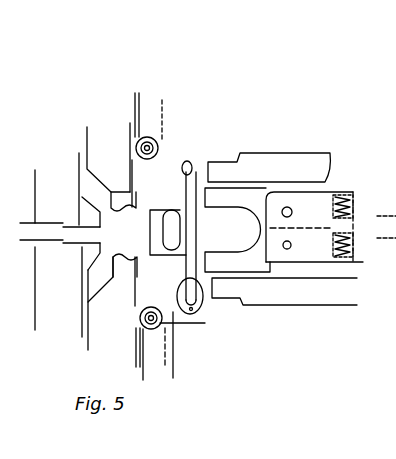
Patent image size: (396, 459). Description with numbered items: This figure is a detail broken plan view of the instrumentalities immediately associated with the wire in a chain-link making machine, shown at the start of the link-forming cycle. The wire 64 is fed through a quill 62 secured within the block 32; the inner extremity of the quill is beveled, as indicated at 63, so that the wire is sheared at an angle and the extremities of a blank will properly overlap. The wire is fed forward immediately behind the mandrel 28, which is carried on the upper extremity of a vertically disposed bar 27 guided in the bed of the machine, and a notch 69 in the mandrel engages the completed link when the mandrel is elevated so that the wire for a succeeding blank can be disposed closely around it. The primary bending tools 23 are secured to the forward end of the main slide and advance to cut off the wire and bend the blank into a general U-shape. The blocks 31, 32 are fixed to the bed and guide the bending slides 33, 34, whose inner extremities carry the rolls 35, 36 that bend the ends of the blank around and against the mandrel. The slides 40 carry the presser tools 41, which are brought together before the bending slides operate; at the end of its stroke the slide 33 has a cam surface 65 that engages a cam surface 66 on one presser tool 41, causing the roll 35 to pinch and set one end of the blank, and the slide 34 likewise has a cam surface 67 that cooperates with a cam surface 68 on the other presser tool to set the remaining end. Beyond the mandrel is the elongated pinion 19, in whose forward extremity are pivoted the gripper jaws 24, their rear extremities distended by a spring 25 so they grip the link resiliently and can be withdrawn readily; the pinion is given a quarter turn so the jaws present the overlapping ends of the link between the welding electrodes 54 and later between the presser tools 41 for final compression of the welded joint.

The elongated pinion 19 is at (327, 160).
The primary bending tools 23 is at (282, 229).
The gripper jaws 24 is at (284, 230).
The spring 25 is at (339, 195).
The vertically disposed bar 27 is at (197, 228).
The mandrel 28 is at (172, 222).
The block 31 is at (149, 121).
The block 32 is at (167, 358).
The bending slide 33 is at (136, 119).
The bending slide 34 is at (139, 363).
The roll 35 is at (159, 147).
The roll 36 is at (166, 324).
The slides 40 is at (108, 238).
The presser tools 41 is at (133, 178).
The welding electrodes 54 is at (63, 228).
The quill 62 is at (203, 312).
The beveled inner extremity 63 is at (203, 303).
The wire 64 is at (190, 162).
The cam surface 65 is at (130, 137).
The cam surface 66 is at (133, 210).
The cam surface 67 is at (137, 331).
The cam surface 68 is at (131, 254).
The notch 69 is at (176, 236).